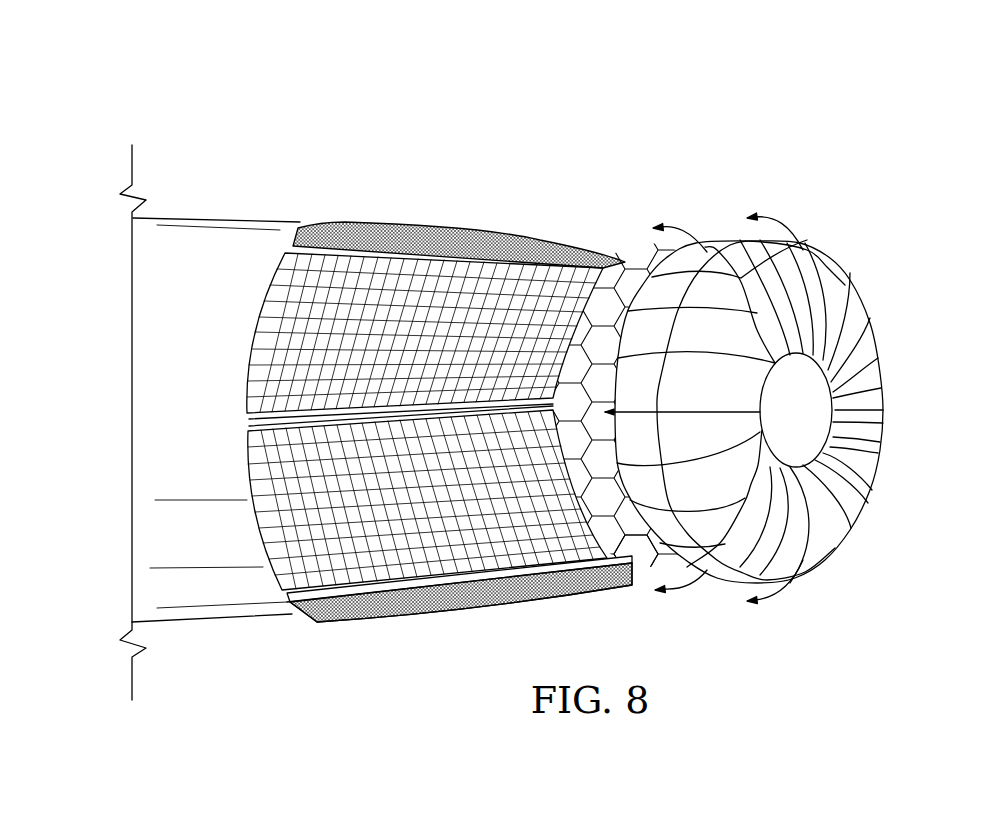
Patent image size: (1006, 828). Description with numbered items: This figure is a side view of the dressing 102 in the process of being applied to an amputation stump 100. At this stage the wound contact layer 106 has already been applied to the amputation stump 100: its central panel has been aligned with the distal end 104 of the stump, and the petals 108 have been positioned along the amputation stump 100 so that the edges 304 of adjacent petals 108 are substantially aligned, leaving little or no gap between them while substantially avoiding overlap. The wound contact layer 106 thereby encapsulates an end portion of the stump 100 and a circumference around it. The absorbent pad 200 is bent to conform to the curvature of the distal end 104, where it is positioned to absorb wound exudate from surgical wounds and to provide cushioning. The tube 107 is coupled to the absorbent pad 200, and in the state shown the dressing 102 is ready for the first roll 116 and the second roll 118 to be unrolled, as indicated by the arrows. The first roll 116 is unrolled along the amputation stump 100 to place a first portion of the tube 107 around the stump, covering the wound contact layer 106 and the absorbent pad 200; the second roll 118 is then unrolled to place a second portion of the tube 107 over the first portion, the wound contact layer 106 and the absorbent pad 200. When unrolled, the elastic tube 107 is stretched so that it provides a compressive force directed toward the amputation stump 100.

The amputation stump 100 is at (202, 237).
The dressing 102 is at (559, 354).
The distal end 104 is at (621, 258).
The wound contact layer 106 is at (425, 411).
The tube 107 is at (783, 190).
The petals 108 is at (438, 223).
The first roll 116 is at (722, 568).
The second roll 118 is at (863, 436).
The absorbent pad 200 is at (626, 566).
The edges 304 is at (250, 421).